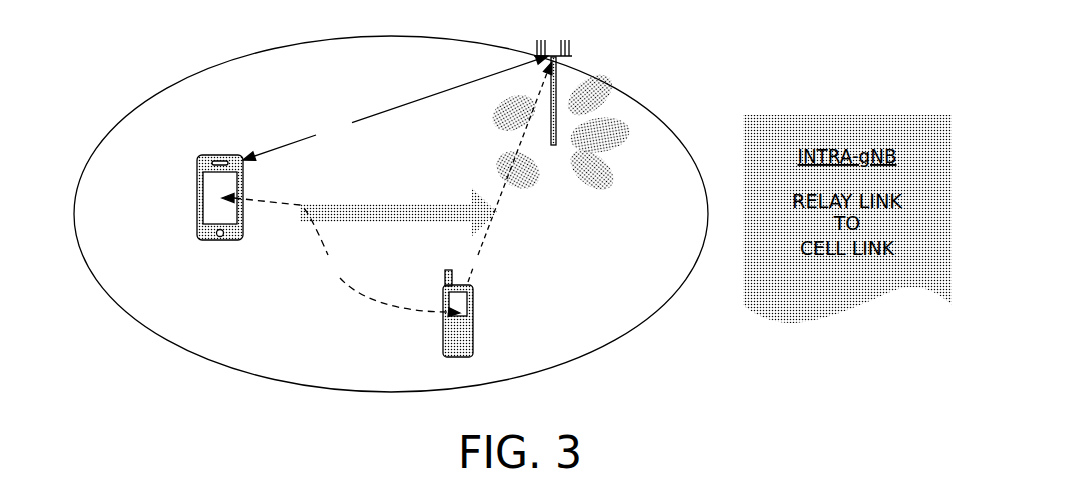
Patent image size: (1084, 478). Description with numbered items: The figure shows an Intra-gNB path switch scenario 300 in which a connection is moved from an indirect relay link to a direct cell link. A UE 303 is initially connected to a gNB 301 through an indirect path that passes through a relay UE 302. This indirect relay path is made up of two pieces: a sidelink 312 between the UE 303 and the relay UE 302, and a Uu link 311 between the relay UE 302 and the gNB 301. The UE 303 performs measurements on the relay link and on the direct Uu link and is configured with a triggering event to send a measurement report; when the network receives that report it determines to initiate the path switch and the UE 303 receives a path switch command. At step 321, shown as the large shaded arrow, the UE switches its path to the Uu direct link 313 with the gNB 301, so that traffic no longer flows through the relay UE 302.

The wireless communication network / cell 300 is at (188, 66).
The gNB 301 is at (556, 60).
The relay UE 302 is at (218, 155).
The UE 303 is at (452, 296).
The Uu link 311 is at (395, 108).
The sidelink 312 is at (341, 255).
The Uu direct link 313 is at (508, 172).
The path switch step 321 is at (398, 212).